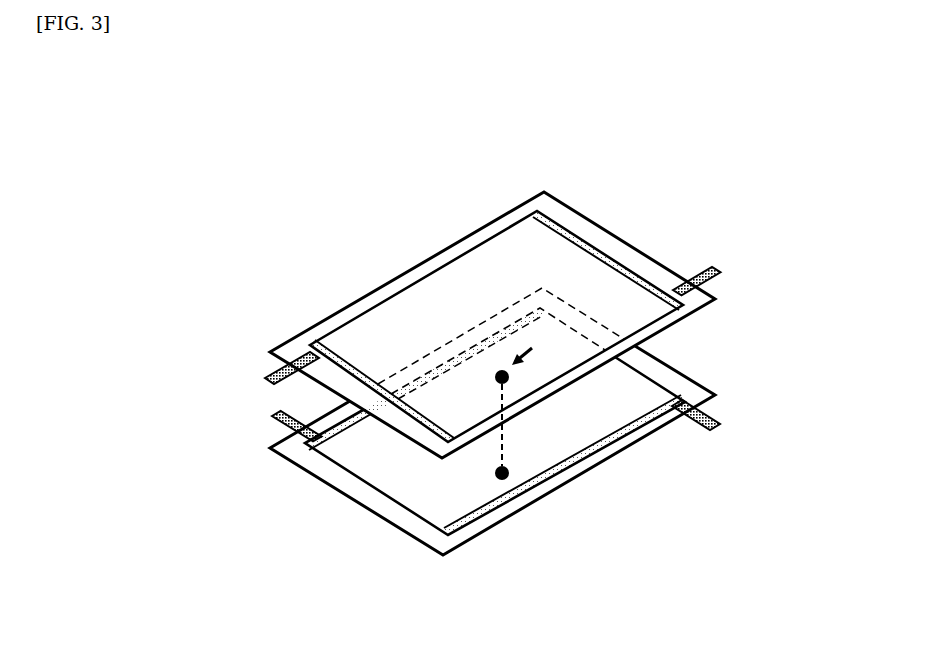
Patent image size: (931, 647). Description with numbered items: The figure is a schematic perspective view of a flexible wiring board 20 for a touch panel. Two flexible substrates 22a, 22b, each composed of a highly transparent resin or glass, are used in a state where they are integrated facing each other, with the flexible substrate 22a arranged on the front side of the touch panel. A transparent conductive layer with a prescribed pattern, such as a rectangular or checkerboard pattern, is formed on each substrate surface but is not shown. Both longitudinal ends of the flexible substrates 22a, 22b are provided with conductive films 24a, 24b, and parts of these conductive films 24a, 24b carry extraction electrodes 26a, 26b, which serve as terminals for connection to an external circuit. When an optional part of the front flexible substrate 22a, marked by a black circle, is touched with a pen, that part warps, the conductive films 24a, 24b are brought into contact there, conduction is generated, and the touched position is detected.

The flexible wiring board 20 is at (692, 162).
The flexible substrate 22a is at (547, 195).
The flexible substrate 22b is at (323, 475).
The conductive film 24a is at (345, 367).
The conductive film 24b is at (343, 433).
The extraction electrode 26a is at (273, 378).
The extraction electrode 26b is at (282, 422).